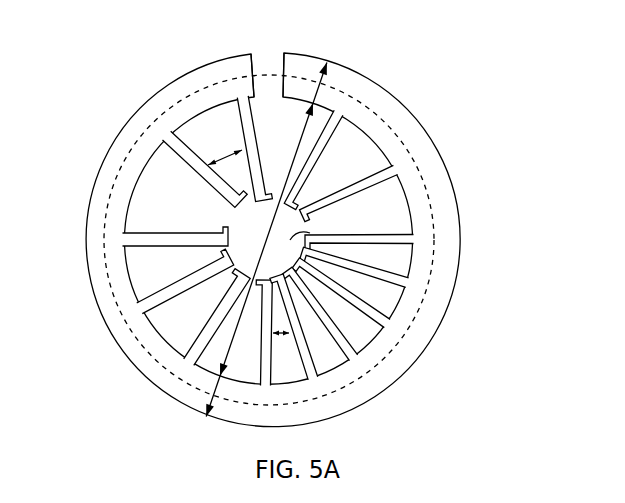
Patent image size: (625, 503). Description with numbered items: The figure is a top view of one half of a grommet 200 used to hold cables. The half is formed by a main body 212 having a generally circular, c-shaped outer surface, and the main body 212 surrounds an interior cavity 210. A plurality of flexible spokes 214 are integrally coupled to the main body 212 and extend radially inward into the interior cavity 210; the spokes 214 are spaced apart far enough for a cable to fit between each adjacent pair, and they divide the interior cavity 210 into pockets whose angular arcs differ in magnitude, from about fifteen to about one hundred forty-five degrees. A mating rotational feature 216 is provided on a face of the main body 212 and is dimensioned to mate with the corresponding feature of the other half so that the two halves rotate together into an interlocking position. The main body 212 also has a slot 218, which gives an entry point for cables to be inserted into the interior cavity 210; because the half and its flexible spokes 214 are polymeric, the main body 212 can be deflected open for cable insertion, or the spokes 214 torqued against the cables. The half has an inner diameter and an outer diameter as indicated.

The grommet 200 is at (286, 213).
The interior cavity 210 is at (312, 234).
The main body 212 is at (443, 200).
The flexible spokes 214 is at (153, 233).
The mating rotational feature 216 is at (358, 100).
The slot 218 is at (268, 58).